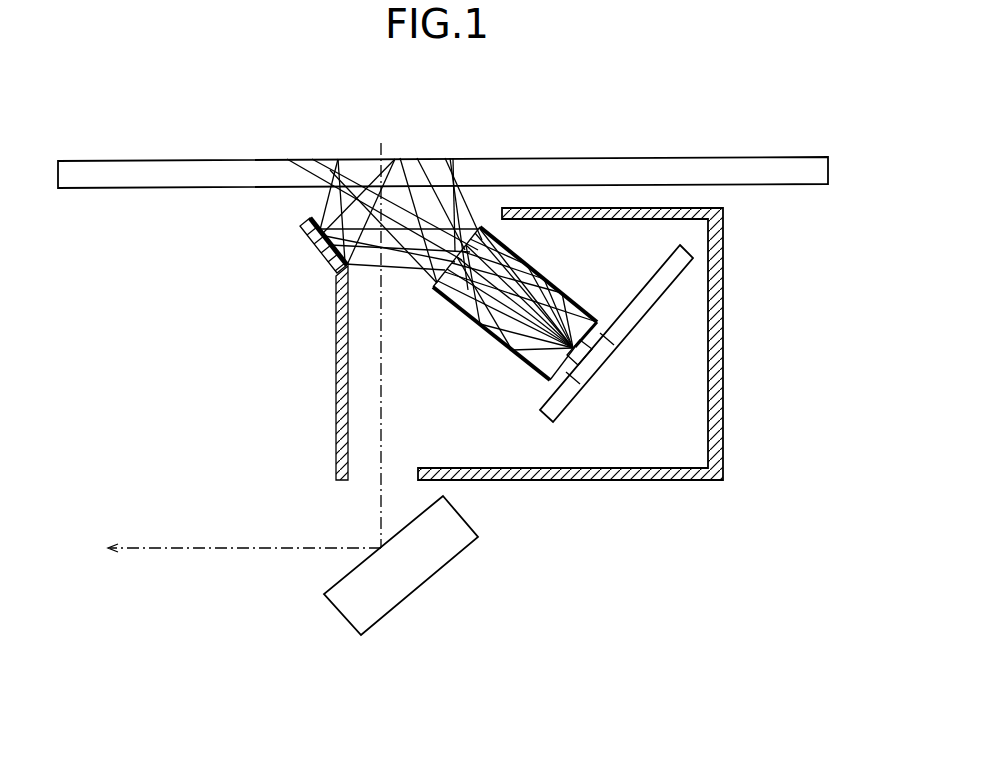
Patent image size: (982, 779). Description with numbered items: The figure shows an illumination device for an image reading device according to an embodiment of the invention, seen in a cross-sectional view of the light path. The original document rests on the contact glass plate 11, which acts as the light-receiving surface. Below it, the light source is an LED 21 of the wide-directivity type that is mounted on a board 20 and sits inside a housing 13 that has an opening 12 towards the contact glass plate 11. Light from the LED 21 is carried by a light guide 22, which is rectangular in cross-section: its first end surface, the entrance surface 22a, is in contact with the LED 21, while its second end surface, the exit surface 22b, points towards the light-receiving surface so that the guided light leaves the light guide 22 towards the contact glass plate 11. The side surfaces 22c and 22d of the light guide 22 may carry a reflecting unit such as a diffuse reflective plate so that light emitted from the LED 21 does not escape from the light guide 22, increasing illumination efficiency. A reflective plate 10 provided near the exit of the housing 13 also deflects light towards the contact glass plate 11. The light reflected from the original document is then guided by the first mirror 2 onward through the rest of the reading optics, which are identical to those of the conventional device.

The first mirror 2 is at (453, 550).
The reflective plate 10 is at (316, 232).
The contact glass plate 11 is at (120, 180).
The opening 12 is at (340, 213).
The housing 13 is at (718, 237).
The board 20 is at (623, 333).
The LED 21 is at (595, 373).
The light guide 22 is at (538, 287).
The entrance surface 22a is at (572, 355).
The exit surface 22b is at (470, 222).
The side surface 22c is at (500, 348).
The side surface 22d is at (590, 302).